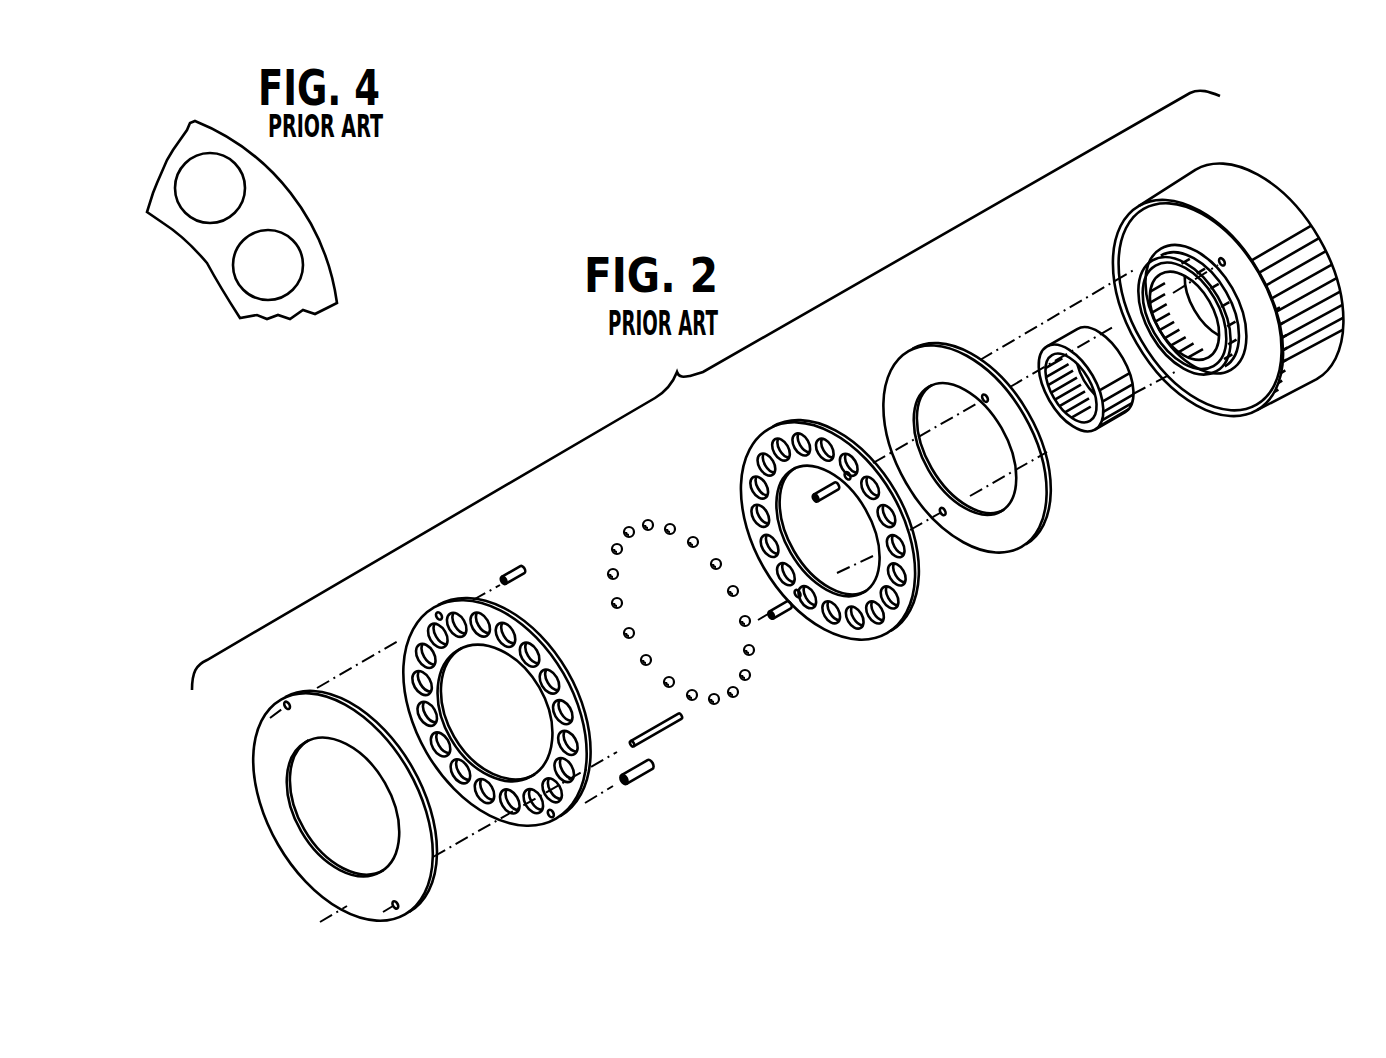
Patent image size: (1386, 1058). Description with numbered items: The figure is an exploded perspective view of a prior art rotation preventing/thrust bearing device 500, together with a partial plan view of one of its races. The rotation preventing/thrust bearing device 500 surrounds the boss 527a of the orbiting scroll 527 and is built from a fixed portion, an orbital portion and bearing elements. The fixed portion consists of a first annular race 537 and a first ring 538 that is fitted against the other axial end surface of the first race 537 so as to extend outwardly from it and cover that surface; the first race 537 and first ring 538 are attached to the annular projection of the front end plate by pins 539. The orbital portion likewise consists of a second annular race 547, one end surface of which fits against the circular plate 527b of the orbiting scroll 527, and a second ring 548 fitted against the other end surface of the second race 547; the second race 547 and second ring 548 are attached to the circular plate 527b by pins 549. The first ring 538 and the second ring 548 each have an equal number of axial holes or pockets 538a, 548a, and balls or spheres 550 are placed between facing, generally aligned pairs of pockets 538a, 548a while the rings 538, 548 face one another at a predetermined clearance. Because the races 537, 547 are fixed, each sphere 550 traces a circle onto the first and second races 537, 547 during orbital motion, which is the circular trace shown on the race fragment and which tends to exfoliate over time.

In FIG. 2, the rotation preventing/thrust bearing device 500 is at (706, 390).
In FIG. 2, the orbiting scroll 527 is at (1229, 298).
In FIG. 2, the boss 527a is at (1180, 377).
In FIG. 2, the circular plate 527b is at (1242, 397).
In FIG. 2, the first annular race 537 is at (413, 897).
In FIG. 2, the first ring 538 is at (527, 822).
In FIG. 2, the holes or pockets 538a is at (432, 634).
In FIG. 2, the pins 539 is at (638, 782).
In FIG. 4, the second annular race 547 is at (318, 262).
In FIG. 2, the second annular race 547 is at (1003, 537).
In FIG. 2, the second ring 548 is at (880, 627).
In FIG. 2, the holes or pockets 548a is at (753, 462).
In FIG. 2, the pins 549 is at (777, 620).
In FIG. 2, the balls or spheres 550 is at (738, 692).